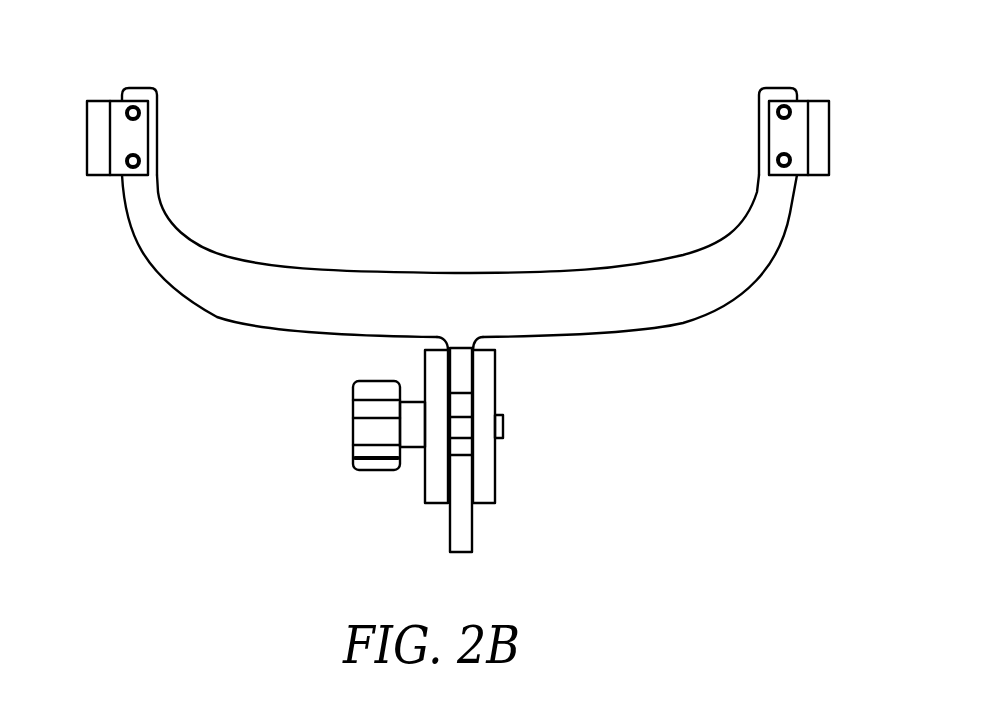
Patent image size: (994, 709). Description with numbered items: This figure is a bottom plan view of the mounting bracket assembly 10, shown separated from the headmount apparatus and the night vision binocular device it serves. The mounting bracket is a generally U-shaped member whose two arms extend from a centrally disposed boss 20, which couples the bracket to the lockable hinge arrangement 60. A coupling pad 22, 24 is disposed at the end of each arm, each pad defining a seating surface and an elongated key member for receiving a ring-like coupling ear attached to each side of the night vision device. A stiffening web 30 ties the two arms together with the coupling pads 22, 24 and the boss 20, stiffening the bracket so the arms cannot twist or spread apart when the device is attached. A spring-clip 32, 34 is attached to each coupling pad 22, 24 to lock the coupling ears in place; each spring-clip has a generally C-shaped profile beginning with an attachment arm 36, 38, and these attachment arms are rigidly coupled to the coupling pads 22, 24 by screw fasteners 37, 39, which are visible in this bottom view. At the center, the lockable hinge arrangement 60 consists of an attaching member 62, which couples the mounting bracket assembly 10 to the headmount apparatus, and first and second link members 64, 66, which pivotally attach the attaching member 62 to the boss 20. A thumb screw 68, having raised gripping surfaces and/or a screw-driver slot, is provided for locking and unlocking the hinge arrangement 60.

The mounting bracket assembly 10 is at (194, 400).
The boss 20 is at (460, 352).
The coupling pad 22 is at (783, 92).
The coupling pad 24 is at (143, 92).
The stiffening web 30 is at (326, 293).
The spring-clip 32 is at (830, 121).
The spring-clip 34 is at (87, 120).
The attachment arm 36 is at (800, 170).
The screw fastener 37 is at (139, 160).
The attachment arm 38 is at (117, 170).
The screw fastener 39 is at (771, 158).
The lockable hinge arrangement 60 is at (496, 447).
The attaching member 62 is at (450, 538).
The first link member 64 is at (490, 500).
The second link member 66 is at (438, 492).
The thumb screw 68 is at (373, 381).